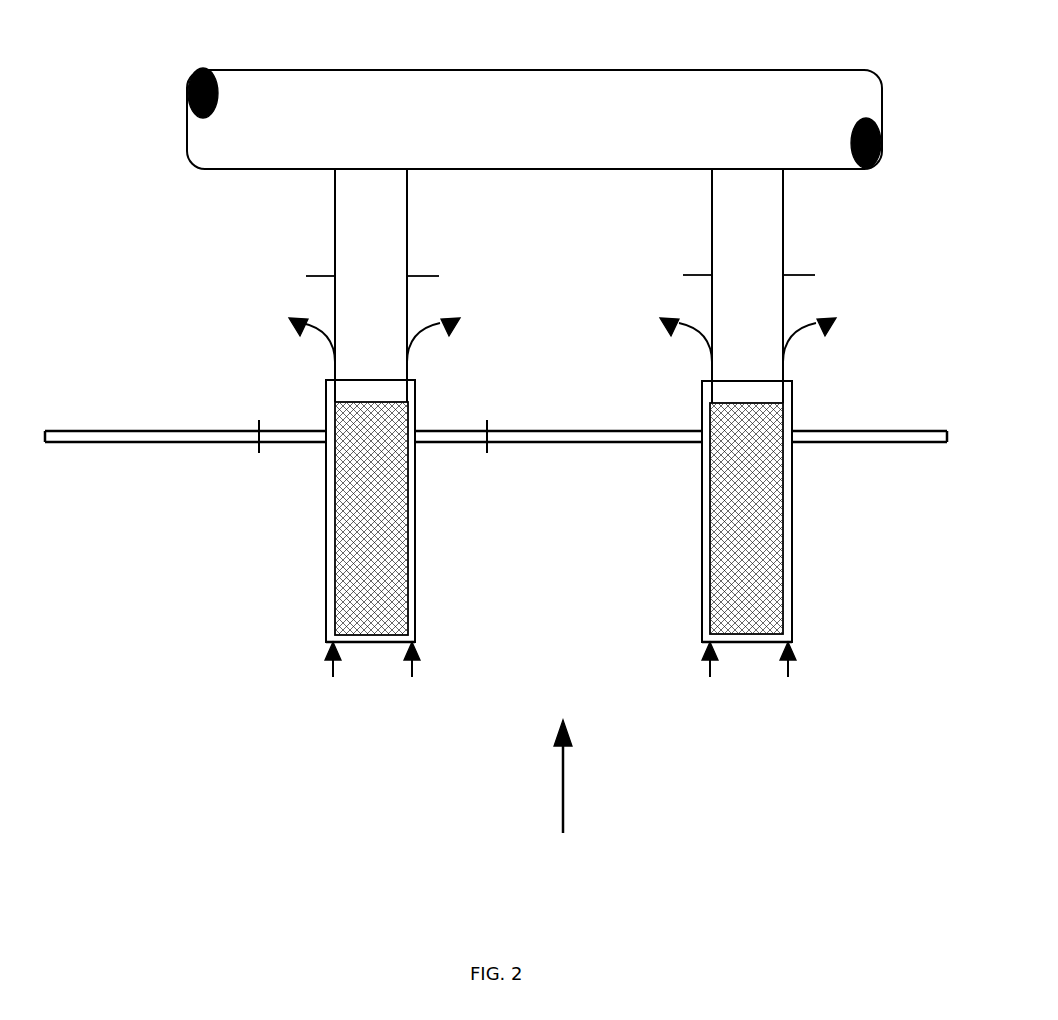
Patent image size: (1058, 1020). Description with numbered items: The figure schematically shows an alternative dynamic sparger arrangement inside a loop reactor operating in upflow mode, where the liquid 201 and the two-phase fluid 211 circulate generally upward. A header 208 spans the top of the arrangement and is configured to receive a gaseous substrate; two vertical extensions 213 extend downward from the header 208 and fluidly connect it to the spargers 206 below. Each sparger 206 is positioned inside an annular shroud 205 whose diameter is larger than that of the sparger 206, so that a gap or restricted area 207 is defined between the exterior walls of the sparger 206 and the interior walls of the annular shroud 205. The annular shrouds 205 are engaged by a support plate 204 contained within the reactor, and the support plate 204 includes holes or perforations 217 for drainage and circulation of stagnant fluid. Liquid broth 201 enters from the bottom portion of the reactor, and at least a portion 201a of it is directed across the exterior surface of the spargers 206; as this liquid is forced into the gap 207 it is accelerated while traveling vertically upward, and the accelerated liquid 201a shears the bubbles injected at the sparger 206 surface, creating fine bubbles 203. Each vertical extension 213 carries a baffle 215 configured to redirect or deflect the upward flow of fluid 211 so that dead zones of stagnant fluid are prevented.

The liquid 201 is at (565, 793).
The portion of liquid 201a is at (560, 670).
The fine bubbles 203 is at (702, 386).
The support plate 204 is at (856, 430).
The annular shroud 205 is at (325, 580).
The sparger 206 is at (375, 526).
The gap 207 is at (415, 615).
The header 208 is at (796, 68).
The fluid 211 is at (563, 335).
The extension 213 is at (372, 196).
The baffle 215 is at (320, 268).
The perforations 217 is at (537, 390).